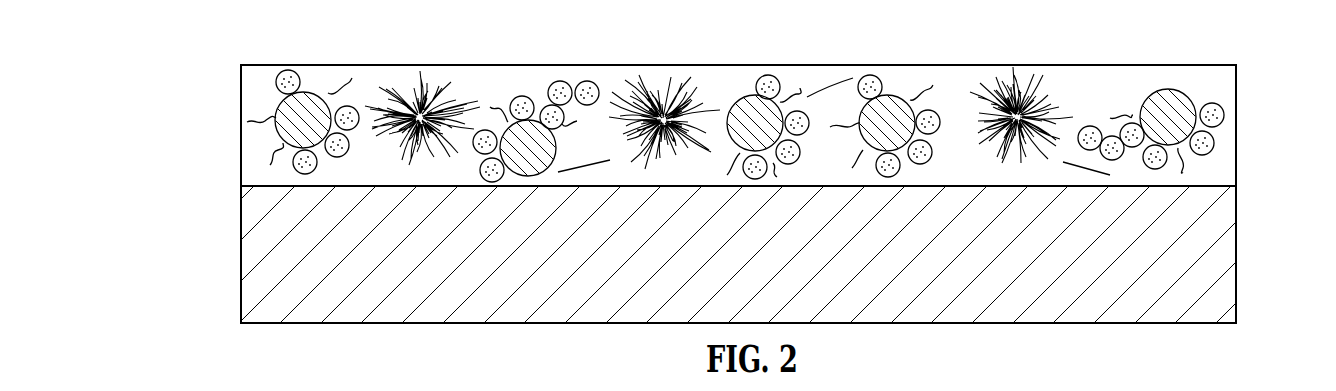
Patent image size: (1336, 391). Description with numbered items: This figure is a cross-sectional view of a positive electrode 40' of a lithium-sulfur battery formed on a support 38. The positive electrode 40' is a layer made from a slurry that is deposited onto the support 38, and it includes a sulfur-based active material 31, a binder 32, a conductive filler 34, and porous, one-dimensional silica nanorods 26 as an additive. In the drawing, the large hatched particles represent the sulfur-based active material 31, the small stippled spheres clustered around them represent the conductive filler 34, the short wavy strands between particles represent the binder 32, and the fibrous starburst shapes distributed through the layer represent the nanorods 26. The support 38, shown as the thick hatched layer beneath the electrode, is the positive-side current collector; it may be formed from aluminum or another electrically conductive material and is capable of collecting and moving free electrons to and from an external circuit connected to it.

The porous one-dimensional SiO2 nanorods 26 is at (587, 170).
The sulfur-based active material 31 is at (1176, 118).
The binder 32 is at (1125, 118).
The conductive filler 34 is at (1217, 112).
The support 38 is at (1188, 248).
The positive electrode 40' is at (694, 125).